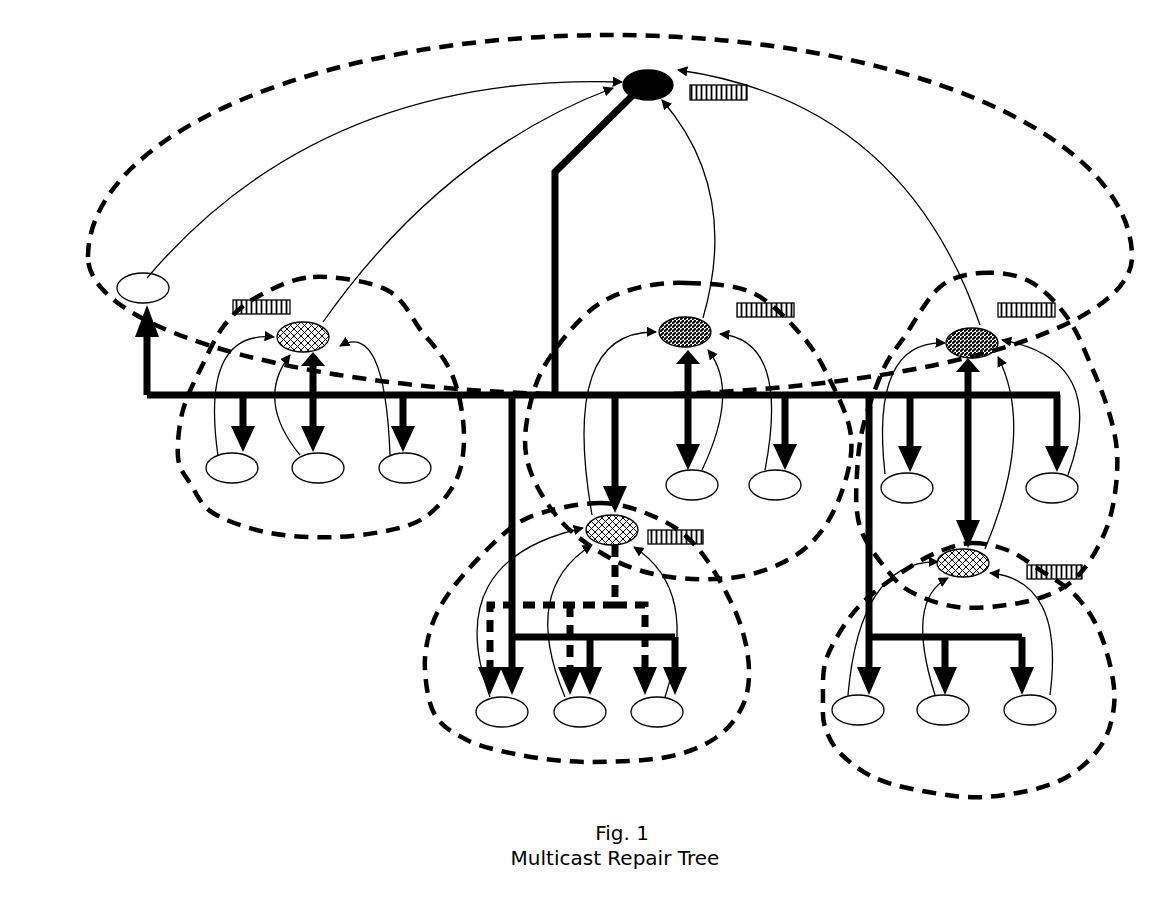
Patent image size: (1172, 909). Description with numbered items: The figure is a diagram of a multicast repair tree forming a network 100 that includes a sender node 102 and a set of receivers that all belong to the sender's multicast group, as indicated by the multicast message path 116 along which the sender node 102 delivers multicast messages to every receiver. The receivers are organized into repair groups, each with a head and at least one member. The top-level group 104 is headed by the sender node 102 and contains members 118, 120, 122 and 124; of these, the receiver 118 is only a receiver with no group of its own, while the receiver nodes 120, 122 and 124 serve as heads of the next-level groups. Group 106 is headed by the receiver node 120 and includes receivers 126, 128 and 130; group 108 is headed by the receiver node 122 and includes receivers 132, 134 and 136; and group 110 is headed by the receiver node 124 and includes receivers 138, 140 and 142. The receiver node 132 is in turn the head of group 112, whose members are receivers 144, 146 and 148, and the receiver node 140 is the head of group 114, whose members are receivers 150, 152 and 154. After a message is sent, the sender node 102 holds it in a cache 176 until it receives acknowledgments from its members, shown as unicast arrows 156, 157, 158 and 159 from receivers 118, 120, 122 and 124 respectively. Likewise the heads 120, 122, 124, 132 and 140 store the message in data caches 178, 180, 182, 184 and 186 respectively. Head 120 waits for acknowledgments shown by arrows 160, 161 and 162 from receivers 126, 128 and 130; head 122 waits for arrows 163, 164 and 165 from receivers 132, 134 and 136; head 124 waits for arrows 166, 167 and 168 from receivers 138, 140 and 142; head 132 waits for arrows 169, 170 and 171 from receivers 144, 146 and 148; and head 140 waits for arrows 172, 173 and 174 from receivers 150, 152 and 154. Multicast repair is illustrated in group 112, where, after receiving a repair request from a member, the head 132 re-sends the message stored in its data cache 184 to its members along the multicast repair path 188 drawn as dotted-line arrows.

The network 100 is at (205, 66).
The sender node 102 is at (650, 70).
The group 104 is at (165, 150).
The group 106 is at (395, 300).
The group 108 is at (805, 345).
The group 110 is at (985, 268).
The group 112 is at (435, 620).
The group 114 is at (838, 625).
The multicast message path 116 is at (560, 175).
The receiver 118 is at (168, 282).
The receiver node 120 is at (330, 332).
The receiver node 122 is at (685, 318).
The receiver node 124 is at (950, 328).
The receiver 126 is at (218, 478).
The receiver 128 is at (330, 482).
The receiver 130 is at (400, 482).
The receiver node 132 is at (598, 514).
The receiver 134 is at (700, 494).
The receiver 136 is at (777, 494).
The receiver 138 is at (912, 497).
The receiver node 140 is at (955, 550).
The receiver 142 is at (1052, 498).
The receiver 144 is at (492, 722).
The receiver 146 is at (582, 725).
The receiver 148 is at (660, 725).
The receiver 150 is at (850, 722).
The receiver 152 is at (942, 725).
The receiver 154 is at (1032, 725).
The arrow 156 is at (307, 148).
The arrow 157 is at (470, 167).
The arrow 158 is at (690, 140).
The arrow 159 is at (860, 147).
The arrow 160 is at (213, 443).
The arrow 161 is at (296, 458).
The arrow 162 is at (383, 415).
The arrow 163 is at (592, 415).
The arrow 164 is at (722, 410).
The arrow 165 is at (770, 425).
The arrow 166 is at (905, 440).
The arrow 167 is at (1020, 412).
The arrow 168 is at (1092, 427).
The arrow 169 is at (465, 640).
The arrow 170 is at (550, 572).
The arrow 171 is at (690, 655).
The arrow 172 is at (845, 672).
The arrow 173 is at (920, 663).
The arrow 174 is at (1050, 625).
The cache 176 is at (712, 100).
The data cache 178 is at (240, 298).
The data cache 180 is at (762, 300).
The data cache 182 is at (1025, 300).
The data cache 184 is at (704, 537).
The data cache 186 is at (1062, 560).
The multicast repair path 188 is at (478, 600).